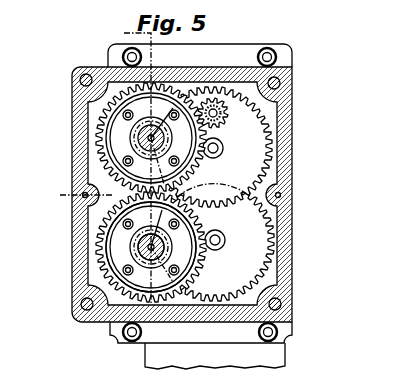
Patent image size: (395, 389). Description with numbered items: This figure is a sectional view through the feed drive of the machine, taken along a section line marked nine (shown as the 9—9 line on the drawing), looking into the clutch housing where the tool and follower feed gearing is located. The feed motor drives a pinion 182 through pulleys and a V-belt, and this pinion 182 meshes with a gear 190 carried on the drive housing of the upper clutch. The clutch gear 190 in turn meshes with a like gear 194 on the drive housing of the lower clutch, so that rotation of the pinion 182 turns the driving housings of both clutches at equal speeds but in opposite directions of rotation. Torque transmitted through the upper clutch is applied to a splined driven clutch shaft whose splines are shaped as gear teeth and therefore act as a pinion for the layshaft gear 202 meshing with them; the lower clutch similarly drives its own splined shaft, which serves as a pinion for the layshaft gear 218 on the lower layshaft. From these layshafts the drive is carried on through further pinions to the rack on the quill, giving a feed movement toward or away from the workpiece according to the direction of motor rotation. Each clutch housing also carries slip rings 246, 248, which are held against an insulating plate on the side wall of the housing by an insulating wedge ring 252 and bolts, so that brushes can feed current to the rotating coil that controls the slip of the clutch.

The section line 9- 9 is at (119, 34).
The pinion 182 is at (231, 114).
The gear 190 is at (173, 108).
The gear 194 is at (118, 258).
The layshaft gear 202 is at (245, 160).
The layshaft gear 218 is at (243, 270).
The slip ring 246 is at (103, 268).
The slip ring 248 is at (135, 244).
The insulating wedge ring 252 is at (121, 262).